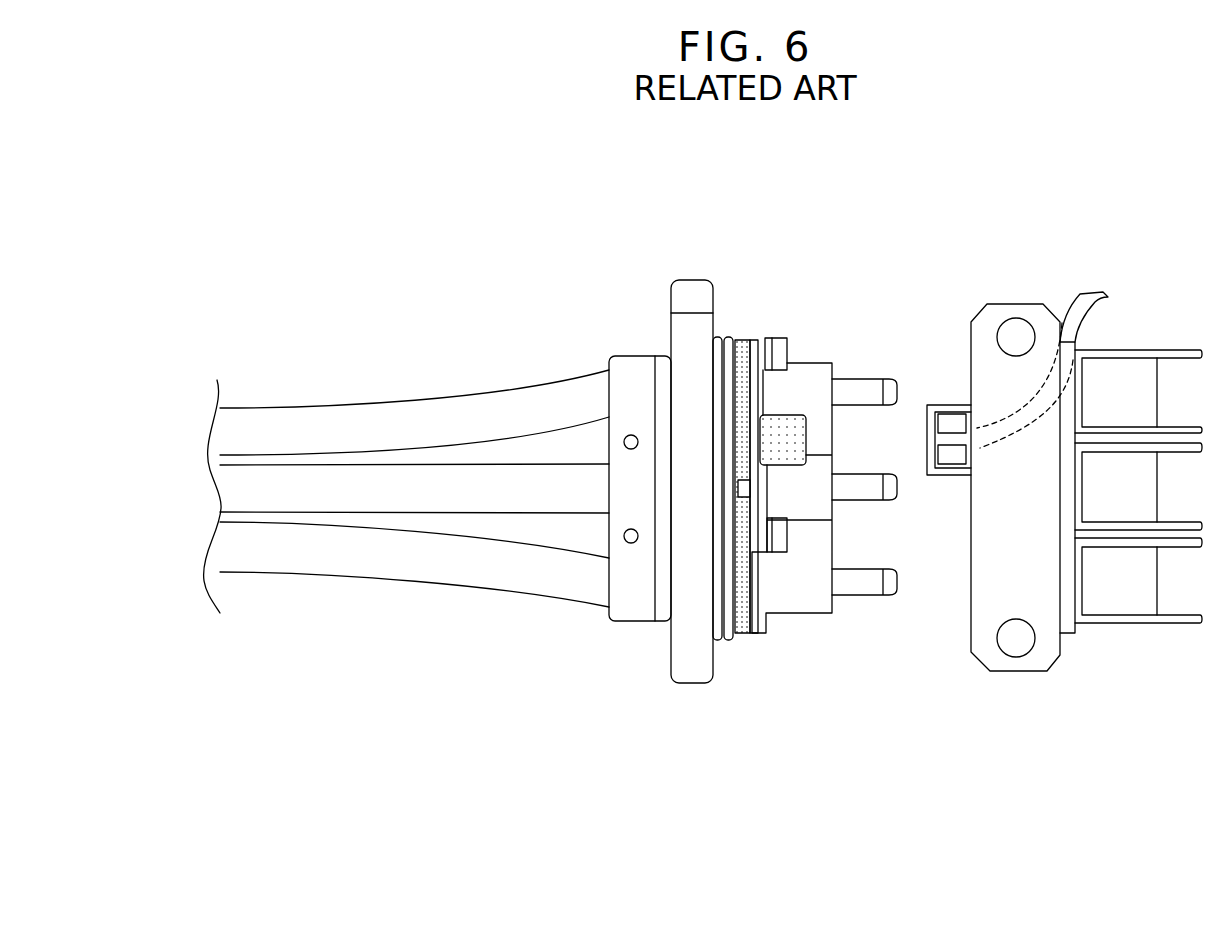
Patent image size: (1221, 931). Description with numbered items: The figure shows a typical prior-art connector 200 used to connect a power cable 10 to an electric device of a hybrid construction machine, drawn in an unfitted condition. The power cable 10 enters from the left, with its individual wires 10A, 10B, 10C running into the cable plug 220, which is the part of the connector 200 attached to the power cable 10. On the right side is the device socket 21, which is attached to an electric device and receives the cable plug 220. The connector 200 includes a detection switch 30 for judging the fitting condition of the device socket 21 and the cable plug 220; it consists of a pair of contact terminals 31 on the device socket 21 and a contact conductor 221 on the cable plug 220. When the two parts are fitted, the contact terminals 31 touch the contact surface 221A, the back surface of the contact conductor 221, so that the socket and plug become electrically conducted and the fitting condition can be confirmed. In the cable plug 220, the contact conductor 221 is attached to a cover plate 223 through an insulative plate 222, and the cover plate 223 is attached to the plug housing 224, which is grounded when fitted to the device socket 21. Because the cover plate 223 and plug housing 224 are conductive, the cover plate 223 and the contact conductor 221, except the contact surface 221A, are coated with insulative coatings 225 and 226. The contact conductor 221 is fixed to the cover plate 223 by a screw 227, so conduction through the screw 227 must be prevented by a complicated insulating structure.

The power cable 10 is at (377, 454).
The first electric wire 10A is at (230, 439).
The second electric wire 10B is at (230, 492).
The third electric wire 10C is at (230, 547).
The connector 200 is at (765, 202).
The cable plug 220 is at (695, 300).
The plug housing 224 is at (716, 338).
The cover plate 223 is at (745, 340).
The insulative coating 225 is at (756, 345).
The screw 227 is at (783, 363).
The insulative plate 222 is at (824, 477).
The insulative coating 226 is at (779, 415).
The contact conductor 221 is at (806, 437).
The contact surface 221A is at (779, 467).
The device socket 21 is at (997, 316).
The detection switch 30 is at (924, 387).
The contact terminal 31 is at (914, 397).